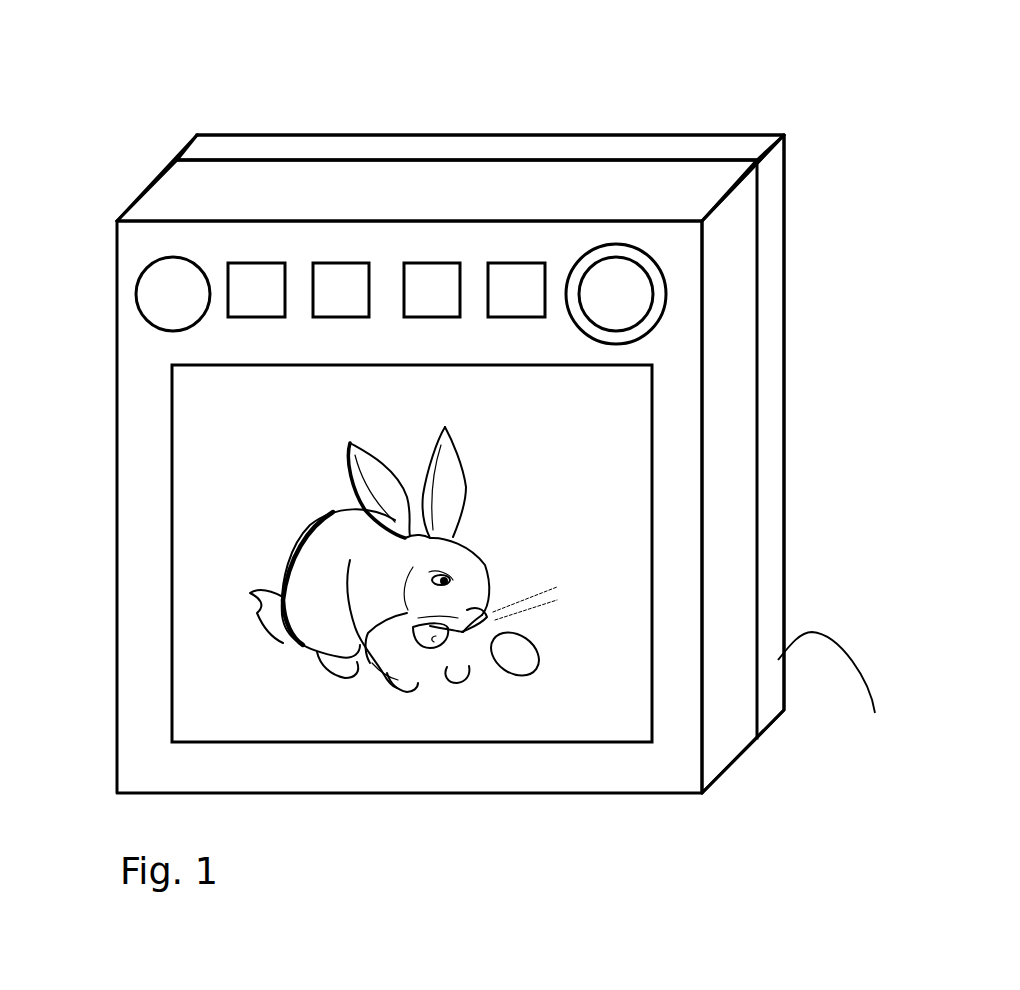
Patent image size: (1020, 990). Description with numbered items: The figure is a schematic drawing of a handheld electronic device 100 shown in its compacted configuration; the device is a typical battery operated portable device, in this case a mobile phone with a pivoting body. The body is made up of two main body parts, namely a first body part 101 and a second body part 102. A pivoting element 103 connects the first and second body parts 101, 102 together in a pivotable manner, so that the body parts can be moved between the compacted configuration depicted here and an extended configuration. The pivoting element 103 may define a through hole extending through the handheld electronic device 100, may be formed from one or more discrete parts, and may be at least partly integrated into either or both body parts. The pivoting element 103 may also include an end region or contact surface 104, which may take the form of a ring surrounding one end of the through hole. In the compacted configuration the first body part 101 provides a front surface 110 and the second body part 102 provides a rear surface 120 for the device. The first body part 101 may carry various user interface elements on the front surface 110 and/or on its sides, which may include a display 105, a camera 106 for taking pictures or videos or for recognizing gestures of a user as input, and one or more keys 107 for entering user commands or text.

The handheld electronic device 100 is at (235, 103).
The first body part 101 is at (327, 187).
The second body part 102 is at (508, 157).
The pivoting element 103 is at (627, 270).
The contact surface 104 is at (667, 285).
The display 105 is at (650, 440).
The camera 106 is at (137, 307).
The keys 107 is at (247, 318).
The front surface 110 is at (680, 555).
The rear surface 120 is at (850, 694).